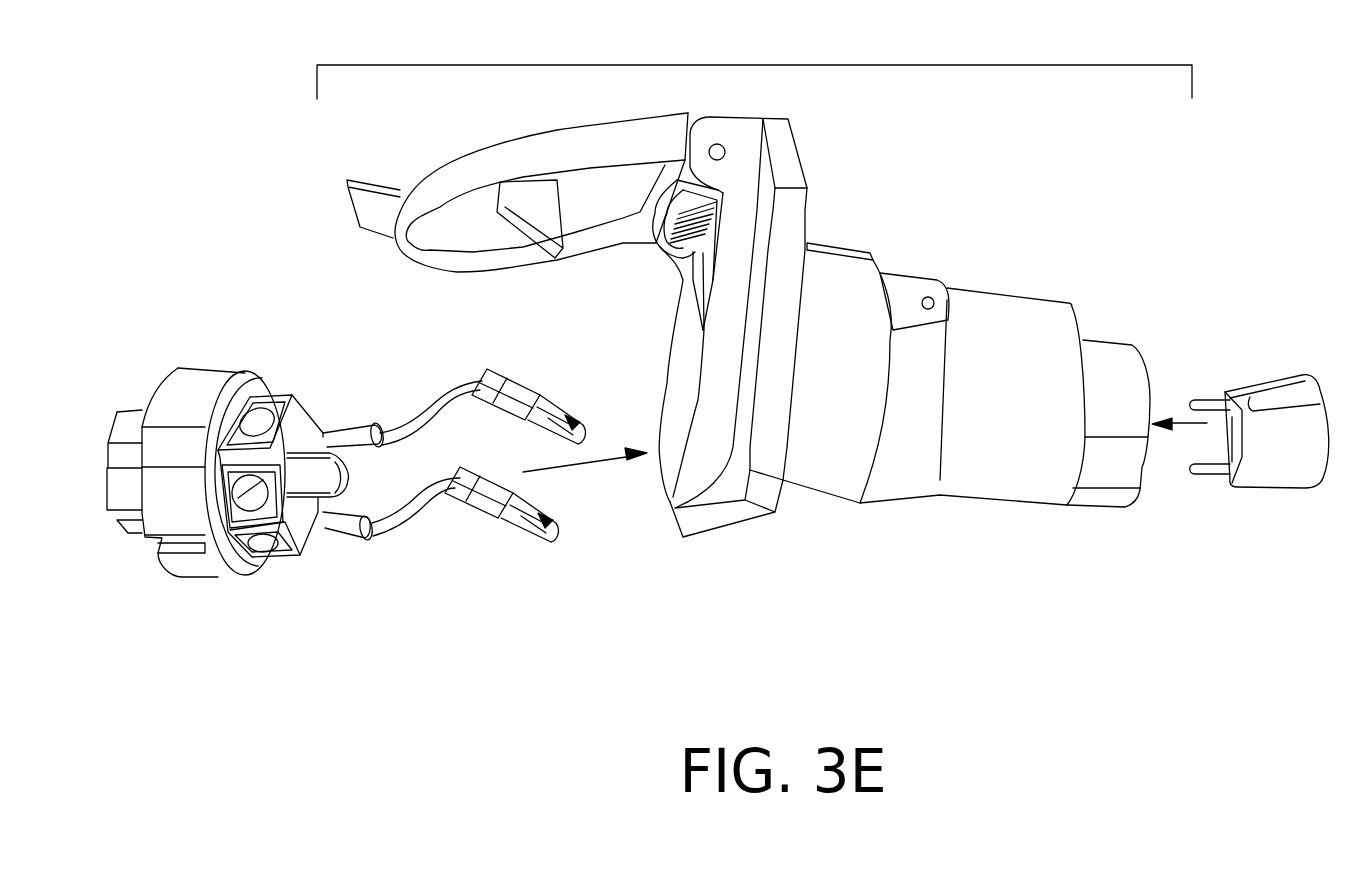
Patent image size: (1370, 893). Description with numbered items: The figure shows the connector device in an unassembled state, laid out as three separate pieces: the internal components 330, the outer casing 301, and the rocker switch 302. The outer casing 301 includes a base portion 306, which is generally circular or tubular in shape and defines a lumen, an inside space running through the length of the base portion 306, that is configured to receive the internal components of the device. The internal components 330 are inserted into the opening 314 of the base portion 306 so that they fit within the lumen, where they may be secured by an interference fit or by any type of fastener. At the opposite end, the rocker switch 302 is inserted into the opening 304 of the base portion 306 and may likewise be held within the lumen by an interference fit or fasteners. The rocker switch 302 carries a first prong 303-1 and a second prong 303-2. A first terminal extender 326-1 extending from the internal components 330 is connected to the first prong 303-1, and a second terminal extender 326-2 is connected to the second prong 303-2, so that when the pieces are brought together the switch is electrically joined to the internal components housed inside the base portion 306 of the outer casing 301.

The outer casing 301 is at (754, 68).
The rocker switch 302 is at (1279, 463).
The first prong 303-1 is at (1205, 395).
The second prong 303-2 is at (1212, 476).
The opening 304 is at (1148, 423).
The base portion 306 is at (833, 482).
The opening 314 is at (652, 433).
The first terminal extender 326-1 is at (390, 533).
The second terminal extender 326-2 is at (403, 427).
The internal components 330 is at (218, 577).